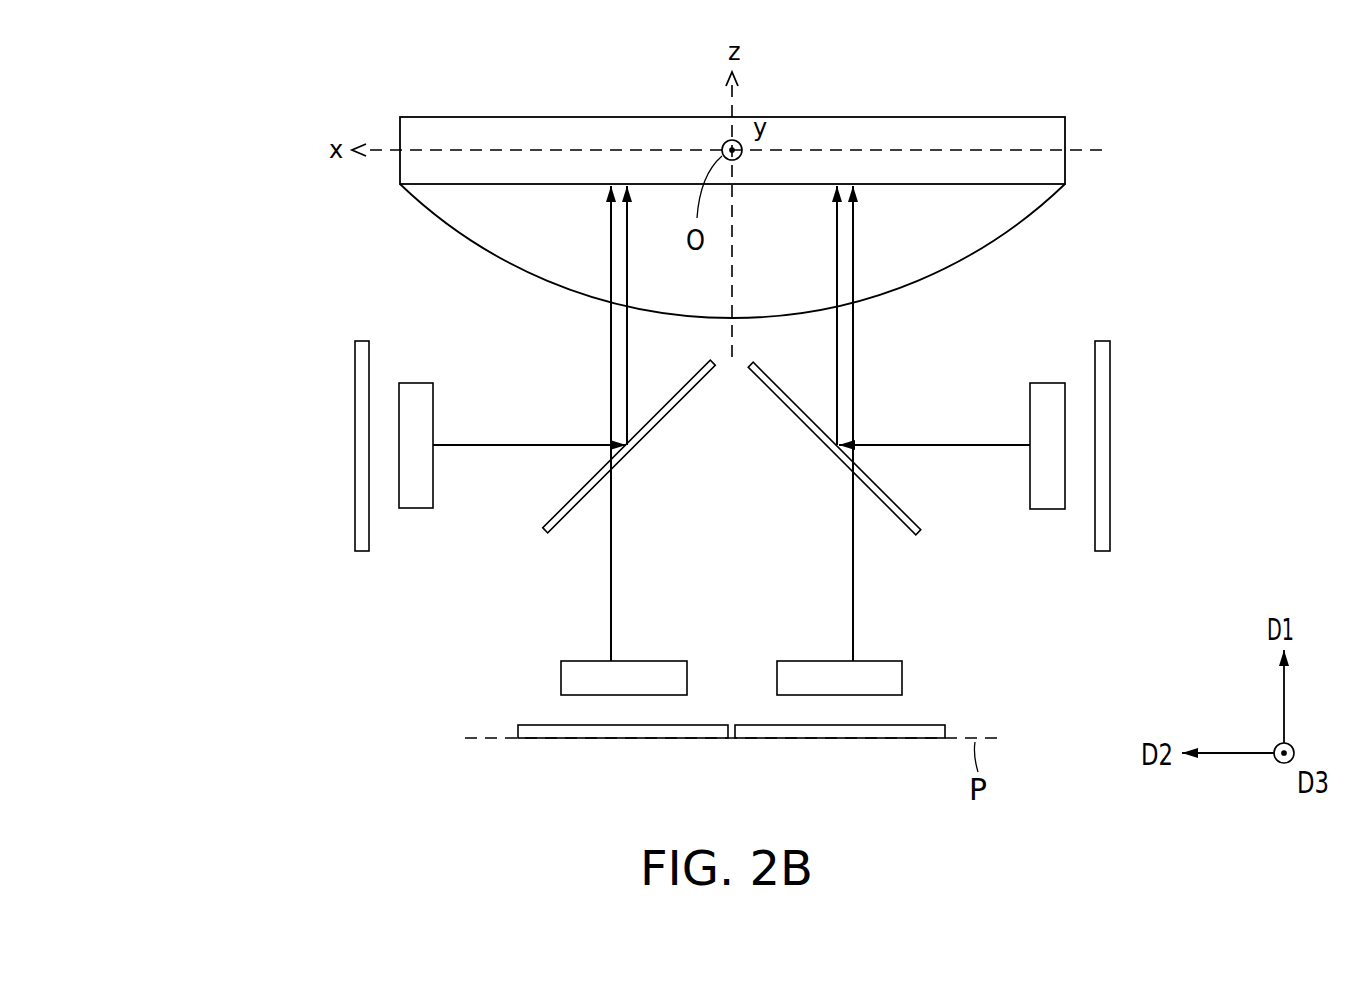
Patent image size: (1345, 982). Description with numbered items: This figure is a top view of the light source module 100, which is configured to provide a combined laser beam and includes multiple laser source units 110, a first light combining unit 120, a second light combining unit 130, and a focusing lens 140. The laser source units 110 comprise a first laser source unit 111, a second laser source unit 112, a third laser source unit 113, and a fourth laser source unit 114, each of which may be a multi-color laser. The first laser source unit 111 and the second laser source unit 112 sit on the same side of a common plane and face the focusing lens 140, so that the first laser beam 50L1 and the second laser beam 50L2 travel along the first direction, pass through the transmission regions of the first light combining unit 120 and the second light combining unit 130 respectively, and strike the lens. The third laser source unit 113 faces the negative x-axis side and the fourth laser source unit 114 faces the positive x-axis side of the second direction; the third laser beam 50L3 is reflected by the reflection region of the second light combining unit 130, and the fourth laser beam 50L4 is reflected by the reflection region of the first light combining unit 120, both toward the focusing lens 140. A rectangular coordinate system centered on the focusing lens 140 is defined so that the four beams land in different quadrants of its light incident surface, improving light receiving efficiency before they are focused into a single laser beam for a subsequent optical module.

The light source module 100 is at (262, 742).
The laser source units 110 is at (104, 37).
The first laser source unit 111 is at (900, 733).
The second laser source unit 112 is at (565, 733).
The third laser source unit 113 is at (355, 375).
The fourth laser source unit 114 is at (1100, 380).
The first light combining unit 120 is at (795, 410).
The second light combining unit 130 is at (656, 425).
The focusing lens 140 is at (968, 228).
The first laser beam 50L1 is at (853, 352).
The second laser beam 50L2 is at (610, 352).
The third laser beam 50L3 is at (626, 400).
The fourth laser beam 50L4 is at (838, 400).